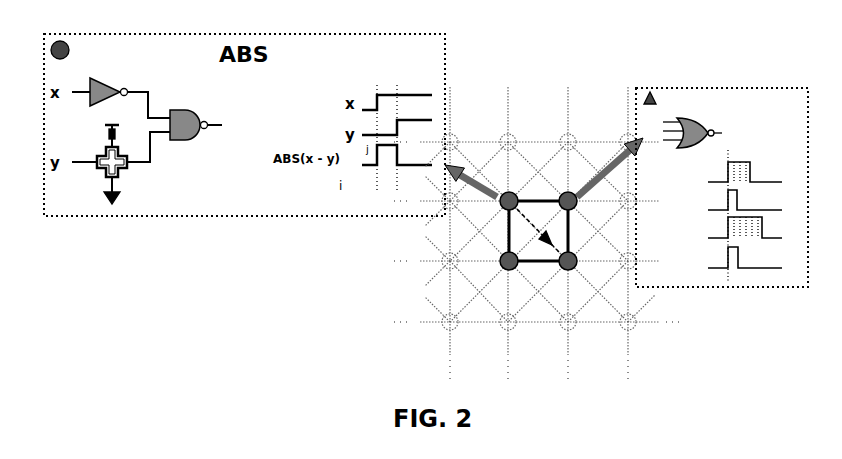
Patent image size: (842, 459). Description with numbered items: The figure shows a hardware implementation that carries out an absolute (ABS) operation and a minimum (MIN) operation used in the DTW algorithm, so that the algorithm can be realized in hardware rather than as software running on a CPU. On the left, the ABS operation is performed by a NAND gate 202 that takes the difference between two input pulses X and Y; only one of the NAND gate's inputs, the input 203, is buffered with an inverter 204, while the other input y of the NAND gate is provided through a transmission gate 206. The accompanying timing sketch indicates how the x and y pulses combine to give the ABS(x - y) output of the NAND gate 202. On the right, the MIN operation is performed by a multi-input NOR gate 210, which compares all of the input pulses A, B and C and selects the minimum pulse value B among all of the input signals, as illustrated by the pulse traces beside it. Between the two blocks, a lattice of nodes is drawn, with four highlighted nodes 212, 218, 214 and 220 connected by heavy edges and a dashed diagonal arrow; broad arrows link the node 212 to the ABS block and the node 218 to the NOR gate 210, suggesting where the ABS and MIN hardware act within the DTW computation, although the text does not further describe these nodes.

The NAND gate 202 is at (232, 111).
The NAND gate input 203 is at (170, 112).
The inverter 204 is at (106, 80).
The transmission gate 206 is at (95, 166).
The multi-input NOR gate 210 is at (759, 88).
The node 212 is at (512, 188).
The node 214 is at (499, 276).
The node 218 is at (577, 188).
The node 220 is at (571, 276).